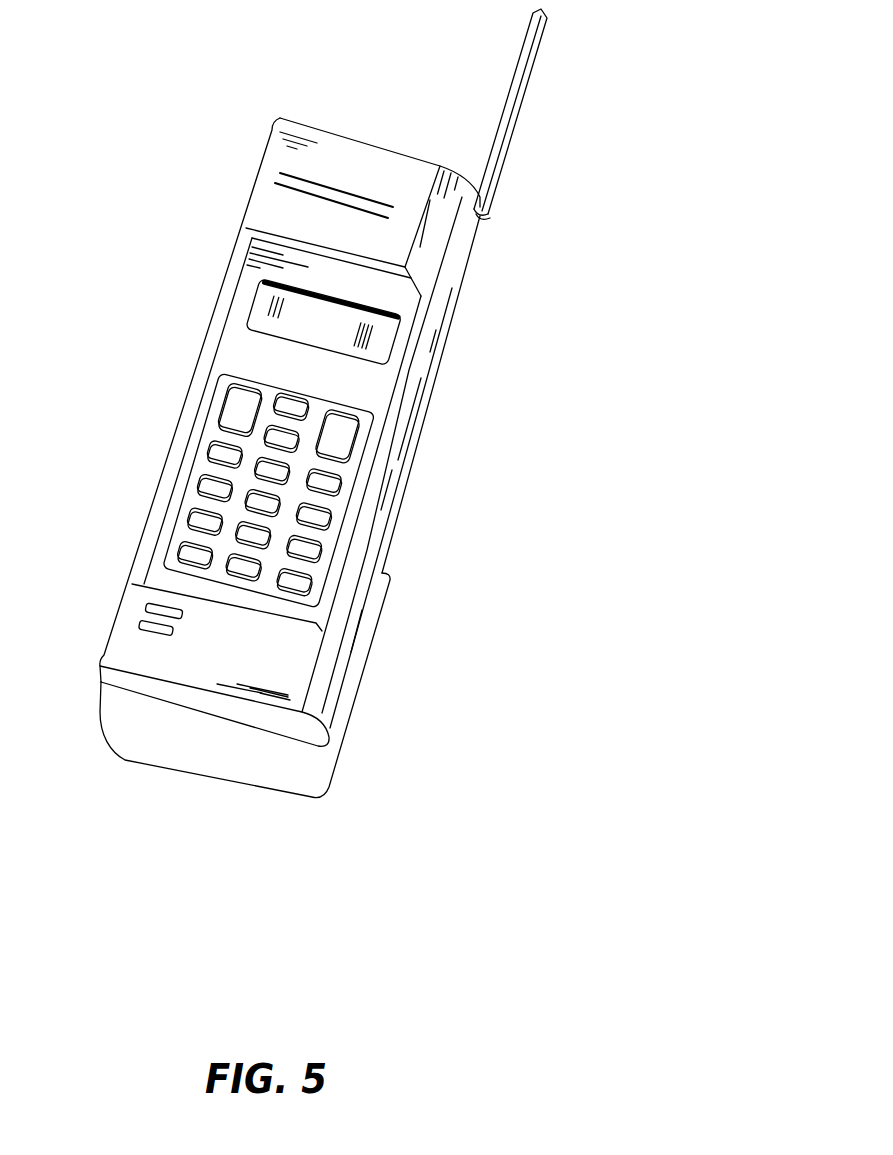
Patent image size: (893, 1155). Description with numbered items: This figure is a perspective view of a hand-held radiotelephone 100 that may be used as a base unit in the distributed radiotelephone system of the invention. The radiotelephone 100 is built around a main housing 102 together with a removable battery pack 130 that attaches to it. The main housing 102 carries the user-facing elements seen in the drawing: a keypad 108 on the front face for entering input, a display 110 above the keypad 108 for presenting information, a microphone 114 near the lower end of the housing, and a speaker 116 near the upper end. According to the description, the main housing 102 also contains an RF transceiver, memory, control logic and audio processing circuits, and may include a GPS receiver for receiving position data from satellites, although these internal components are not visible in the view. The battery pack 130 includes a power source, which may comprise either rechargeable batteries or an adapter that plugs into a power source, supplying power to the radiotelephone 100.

The hand-held radiotelephone 100 is at (559, 252).
The main housing 102 is at (336, 133).
The keypad 108 is at (201, 459).
The display 110 is at (343, 328).
The microphone 114 is at (145, 612).
The speaker 116 is at (293, 203).
The removable battery pack 130 is at (354, 700).